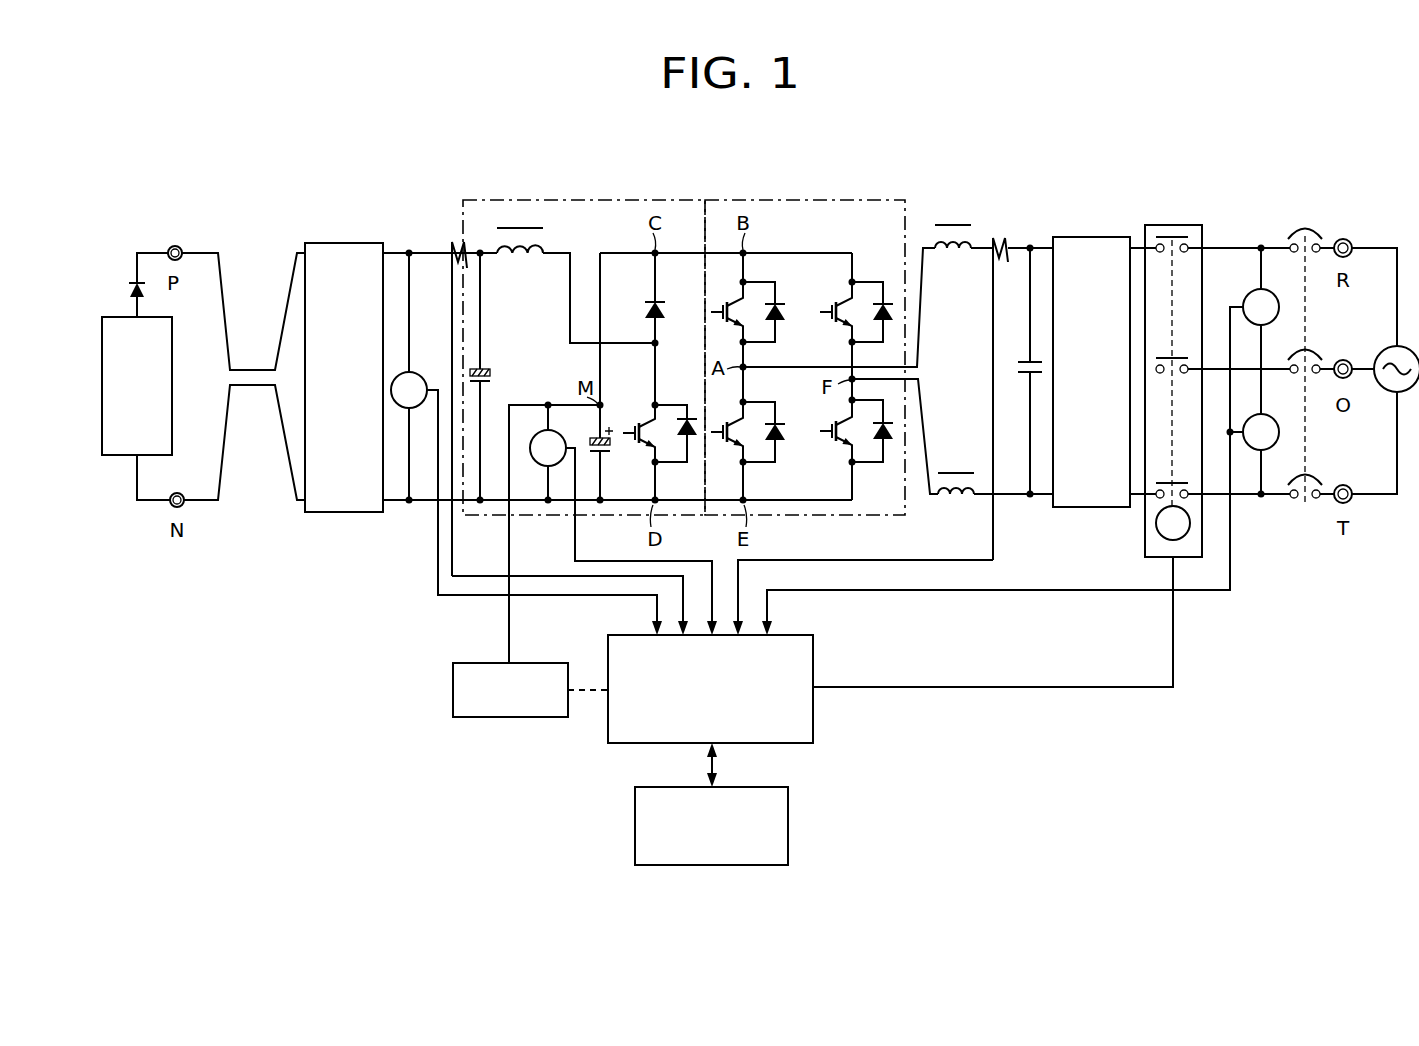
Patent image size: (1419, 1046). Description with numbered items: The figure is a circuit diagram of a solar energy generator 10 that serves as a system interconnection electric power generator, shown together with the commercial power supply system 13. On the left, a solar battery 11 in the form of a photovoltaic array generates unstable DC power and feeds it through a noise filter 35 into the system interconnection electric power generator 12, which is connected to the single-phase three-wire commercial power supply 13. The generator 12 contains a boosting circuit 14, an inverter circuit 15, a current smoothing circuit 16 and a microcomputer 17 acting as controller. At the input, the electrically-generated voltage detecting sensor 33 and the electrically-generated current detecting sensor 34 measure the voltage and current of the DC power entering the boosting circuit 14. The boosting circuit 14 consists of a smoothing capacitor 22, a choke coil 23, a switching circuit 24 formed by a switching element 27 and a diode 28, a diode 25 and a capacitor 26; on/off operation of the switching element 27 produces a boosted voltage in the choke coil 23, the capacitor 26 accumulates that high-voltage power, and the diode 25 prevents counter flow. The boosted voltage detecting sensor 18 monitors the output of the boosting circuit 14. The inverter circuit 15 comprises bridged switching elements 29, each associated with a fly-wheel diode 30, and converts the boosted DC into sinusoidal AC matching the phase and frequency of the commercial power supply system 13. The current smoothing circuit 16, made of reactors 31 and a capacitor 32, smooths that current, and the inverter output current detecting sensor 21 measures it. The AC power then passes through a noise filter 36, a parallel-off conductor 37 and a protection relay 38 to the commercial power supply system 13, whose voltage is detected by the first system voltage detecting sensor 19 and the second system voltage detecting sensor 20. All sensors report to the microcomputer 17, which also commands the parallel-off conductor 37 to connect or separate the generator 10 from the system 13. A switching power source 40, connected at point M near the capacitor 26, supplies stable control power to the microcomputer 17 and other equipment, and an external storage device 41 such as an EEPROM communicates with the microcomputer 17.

The solar energy generator 10 is at (864, 165).
The solar battery 11 is at (172, 362).
The system interconnection electric power generator 12 is at (684, 320).
The commercial power supply system 13 is at (1386, 352).
The boosting circuit 14 is at (541, 200).
The inverter circuit 15 is at (780, 200).
The current smoothing circuit 16 is at (992, 222).
The microcomputer 17 is at (813, 722).
The boosted voltage detecting sensor 18 is at (538, 464).
The first system voltage detecting sensor 19 is at (1271, 294).
The second system voltage detecting sensor 20 is at (1273, 417).
The inverter output current detecting sensor 21 is at (1012, 246).
The smoothing capacitor 22 is at (492, 374).
The choke coil 23 is at (548, 240).
The switching circuit 24 is at (646, 407).
The diode 25 is at (645, 313).
The capacitor 26 is at (612, 453).
The switching element 27 is at (635, 433).
The diode 28 is at (693, 418).
The switching elements 29 is at (722, 309).
The diodes 30 is at (777, 298).
The reactor 31 is at (945, 222).
The capacitor 32 is at (1026, 376).
The electrically-generated voltage detecting sensor 33 is at (421, 372).
The electrically-generated current detecting sensor 34 is at (449, 250).
The noise filter 35 is at (348, 512).
The noise filter 36 is at (1090, 507).
The parallel-off conductor 37 is at (1172, 225).
The protection relay 38 is at (1306, 228).
The switching power source 40 is at (508, 717).
The external storage device 41 is at (788, 827).